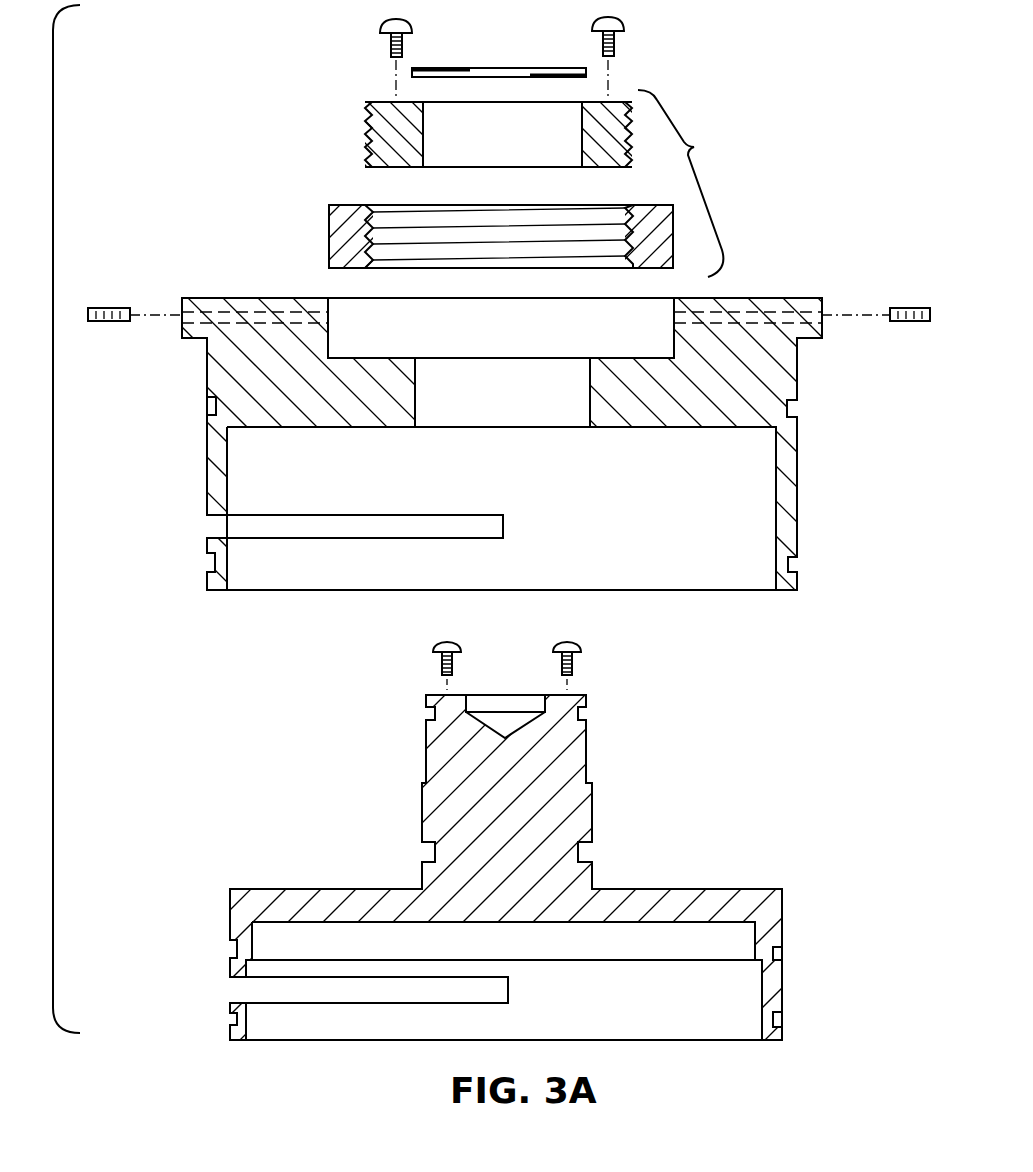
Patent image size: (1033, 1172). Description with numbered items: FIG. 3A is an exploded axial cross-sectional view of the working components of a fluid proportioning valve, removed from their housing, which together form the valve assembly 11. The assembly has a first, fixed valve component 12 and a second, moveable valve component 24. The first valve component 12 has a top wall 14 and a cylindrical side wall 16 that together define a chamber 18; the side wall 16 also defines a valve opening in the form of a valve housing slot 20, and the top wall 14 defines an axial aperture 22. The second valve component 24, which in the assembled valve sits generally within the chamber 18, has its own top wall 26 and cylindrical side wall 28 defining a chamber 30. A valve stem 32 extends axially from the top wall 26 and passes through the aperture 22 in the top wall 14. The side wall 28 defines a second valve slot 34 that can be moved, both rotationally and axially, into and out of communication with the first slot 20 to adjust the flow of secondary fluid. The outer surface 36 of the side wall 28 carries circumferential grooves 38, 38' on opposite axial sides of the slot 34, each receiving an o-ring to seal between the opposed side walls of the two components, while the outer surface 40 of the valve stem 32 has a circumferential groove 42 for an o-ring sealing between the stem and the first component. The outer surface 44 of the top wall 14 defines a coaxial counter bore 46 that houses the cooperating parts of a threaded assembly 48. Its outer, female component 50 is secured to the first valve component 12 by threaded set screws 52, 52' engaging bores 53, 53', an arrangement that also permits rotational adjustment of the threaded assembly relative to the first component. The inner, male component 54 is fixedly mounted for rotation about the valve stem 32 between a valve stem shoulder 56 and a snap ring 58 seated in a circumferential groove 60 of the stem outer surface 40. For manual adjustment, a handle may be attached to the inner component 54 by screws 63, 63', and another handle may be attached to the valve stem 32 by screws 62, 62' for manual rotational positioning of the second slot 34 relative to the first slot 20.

The valve assembly 11 is at (53, 443).
The first valve component 12 is at (765, 298).
The top wall 14 is at (225, 368).
The cylindrical side wall 16 is at (210, 467).
The chamber 18 is at (723, 531).
The valve housing slot 20 is at (218, 527).
The axial aperture 22 is at (556, 410).
The second valve component 24 is at (731, 889).
The top wall 26 is at (295, 898).
The cylindrical side wall 28 is at (772, 985).
The chamber 30 is at (648, 1007).
The valve stem 32 is at (487, 690).
The second valve slot 34 is at (240, 988).
The outer surface 36 is at (228, 912).
The circumferential groove 38 is at (198, 940).
The circumferential groove 38' is at (205, 1043).
The outer surface 40 is at (593, 810).
The circumferential groove 42 is at (580, 847).
The outer surface 44 is at (245, 298).
The coaxial counter bore 46 is at (360, 312).
The threaded assembly 48 is at (687, 183).
The outer (female) component 50 is at (337, 237).
The threaded set screw 52 is at (135, 287).
The threaded set screw 52' is at (876, 287).
The bore 53 is at (225, 338).
The bore 53' is at (778, 340).
The inner (male) component 54 is at (380, 133).
The valve stem shoulder 56 is at (423, 783).
The snap ring 58 is at (572, 66).
The circumferential groove 60 is at (586, 713).
The screw 62 is at (417, 659).
The screw 62' is at (603, 659).
The screw 63 is at (371, 50).
The screw 63' is at (633, 50).